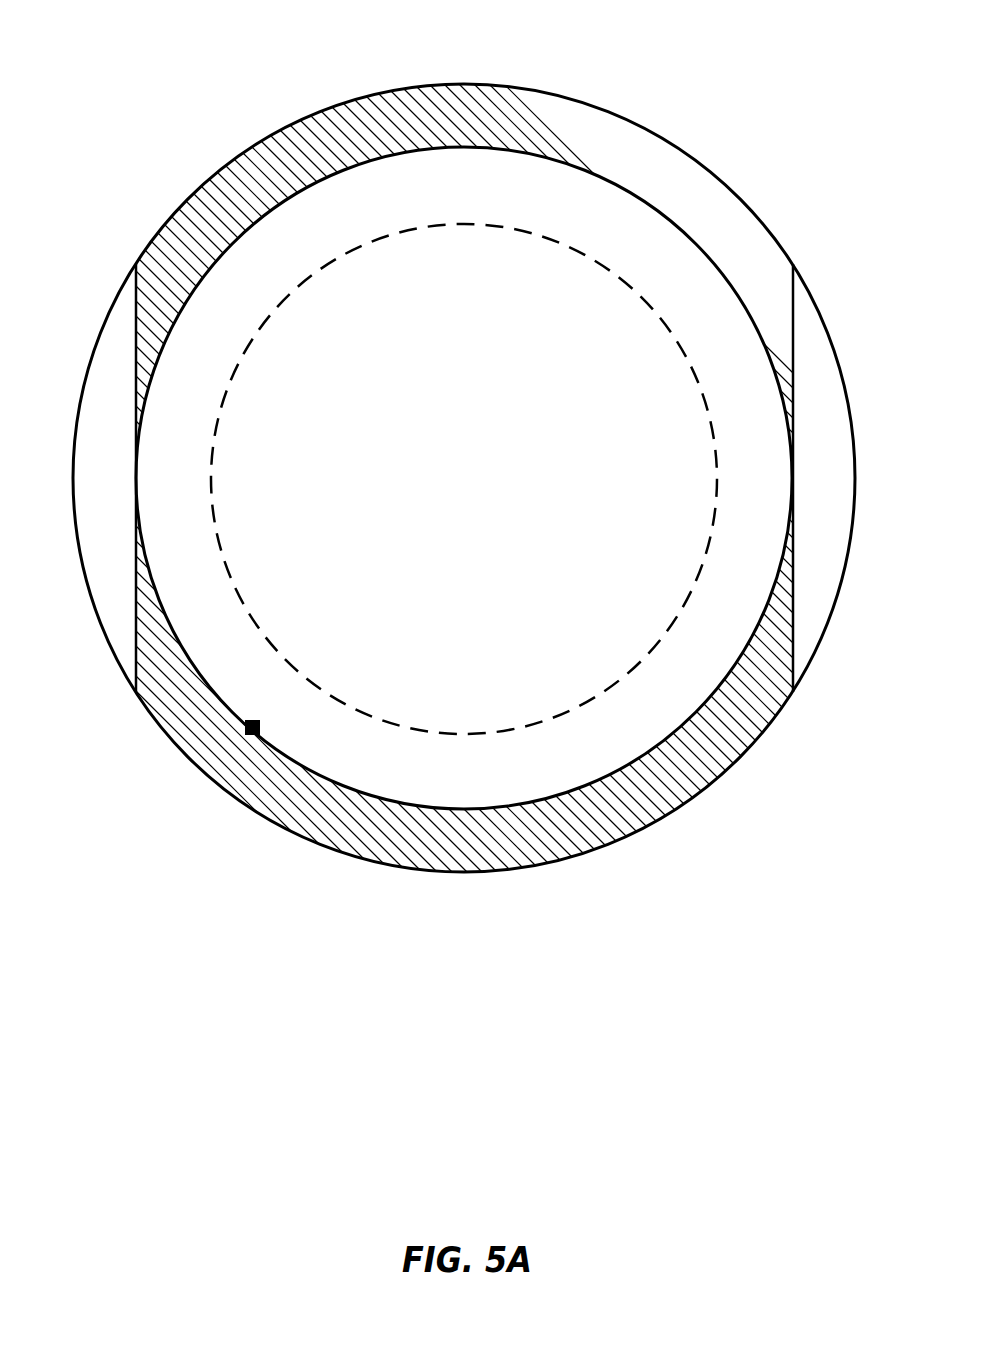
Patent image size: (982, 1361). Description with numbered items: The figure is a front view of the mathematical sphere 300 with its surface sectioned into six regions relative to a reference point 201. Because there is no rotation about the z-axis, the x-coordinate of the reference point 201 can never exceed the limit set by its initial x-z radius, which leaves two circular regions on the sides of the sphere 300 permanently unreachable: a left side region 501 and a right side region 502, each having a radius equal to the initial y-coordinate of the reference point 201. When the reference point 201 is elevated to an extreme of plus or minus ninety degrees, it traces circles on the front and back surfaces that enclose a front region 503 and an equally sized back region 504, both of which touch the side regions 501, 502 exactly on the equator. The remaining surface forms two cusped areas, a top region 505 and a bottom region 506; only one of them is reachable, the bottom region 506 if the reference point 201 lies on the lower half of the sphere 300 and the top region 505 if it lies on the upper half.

The sphere 300 is at (231, 158).
The reference point 201 is at (253, 736).
The left side region 501 is at (118, 309).
The right side region 502 is at (807, 325).
The front region 503 is at (648, 723).
The back region 504 is at (595, 298).
The top region 505 is at (371, 108).
The bottom region 506 is at (497, 867).